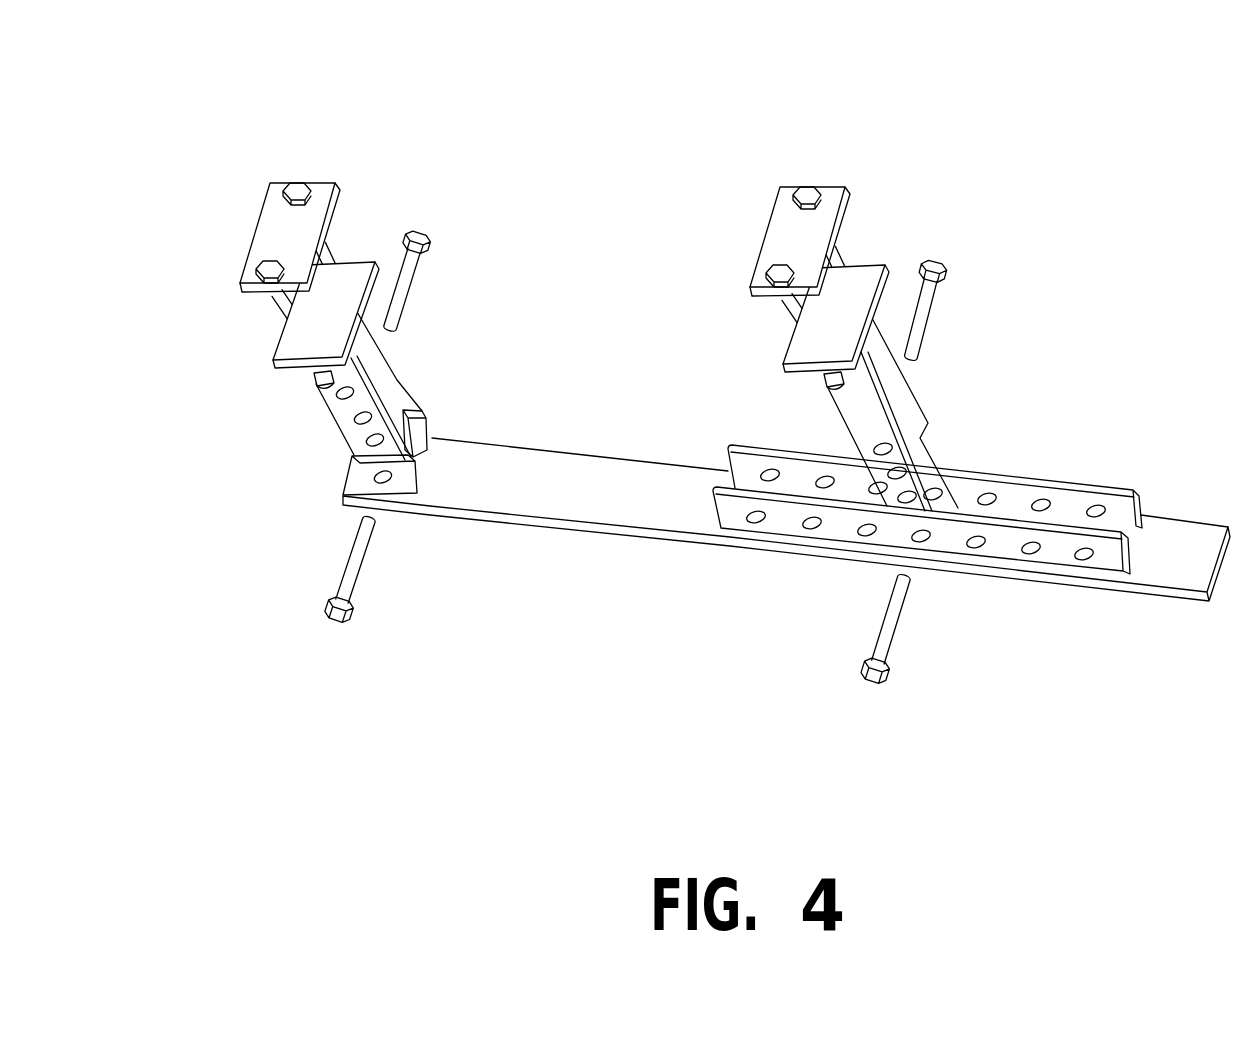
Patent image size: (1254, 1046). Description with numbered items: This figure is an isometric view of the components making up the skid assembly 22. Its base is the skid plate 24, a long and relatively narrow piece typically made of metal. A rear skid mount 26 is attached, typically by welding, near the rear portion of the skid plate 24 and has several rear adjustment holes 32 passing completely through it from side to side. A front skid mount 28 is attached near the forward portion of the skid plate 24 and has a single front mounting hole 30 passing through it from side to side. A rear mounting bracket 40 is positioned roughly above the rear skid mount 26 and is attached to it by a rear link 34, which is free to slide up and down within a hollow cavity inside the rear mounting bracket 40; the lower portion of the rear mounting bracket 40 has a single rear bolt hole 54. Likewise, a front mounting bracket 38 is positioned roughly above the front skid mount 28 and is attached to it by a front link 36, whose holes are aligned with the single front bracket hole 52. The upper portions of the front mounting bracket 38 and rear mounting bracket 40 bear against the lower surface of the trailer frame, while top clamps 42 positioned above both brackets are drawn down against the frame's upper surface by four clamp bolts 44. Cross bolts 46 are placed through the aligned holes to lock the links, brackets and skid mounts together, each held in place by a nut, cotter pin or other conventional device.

The skid assembly 22 is at (617, 700).
The skid plate 24 is at (1163, 597).
The rear skid mount 26 is at (1118, 482).
The front skid mount 28 is at (350, 466).
The front mounting hole 30 is at (377, 483).
The rear adjustment holes 32 is at (862, 537).
The rear link 34 is at (933, 484).
The front link 36 is at (415, 414).
The front mounting bracket 38 is at (387, 370).
The rear mounting bracket 40 is at (918, 418).
The top clamps 42 is at (322, 182).
The clamp bolts 44 is at (283, 308).
The cross bolts 46 is at (423, 231).
The front bracket hole 52 is at (322, 389).
The rear bolt hole 54 is at (892, 458).